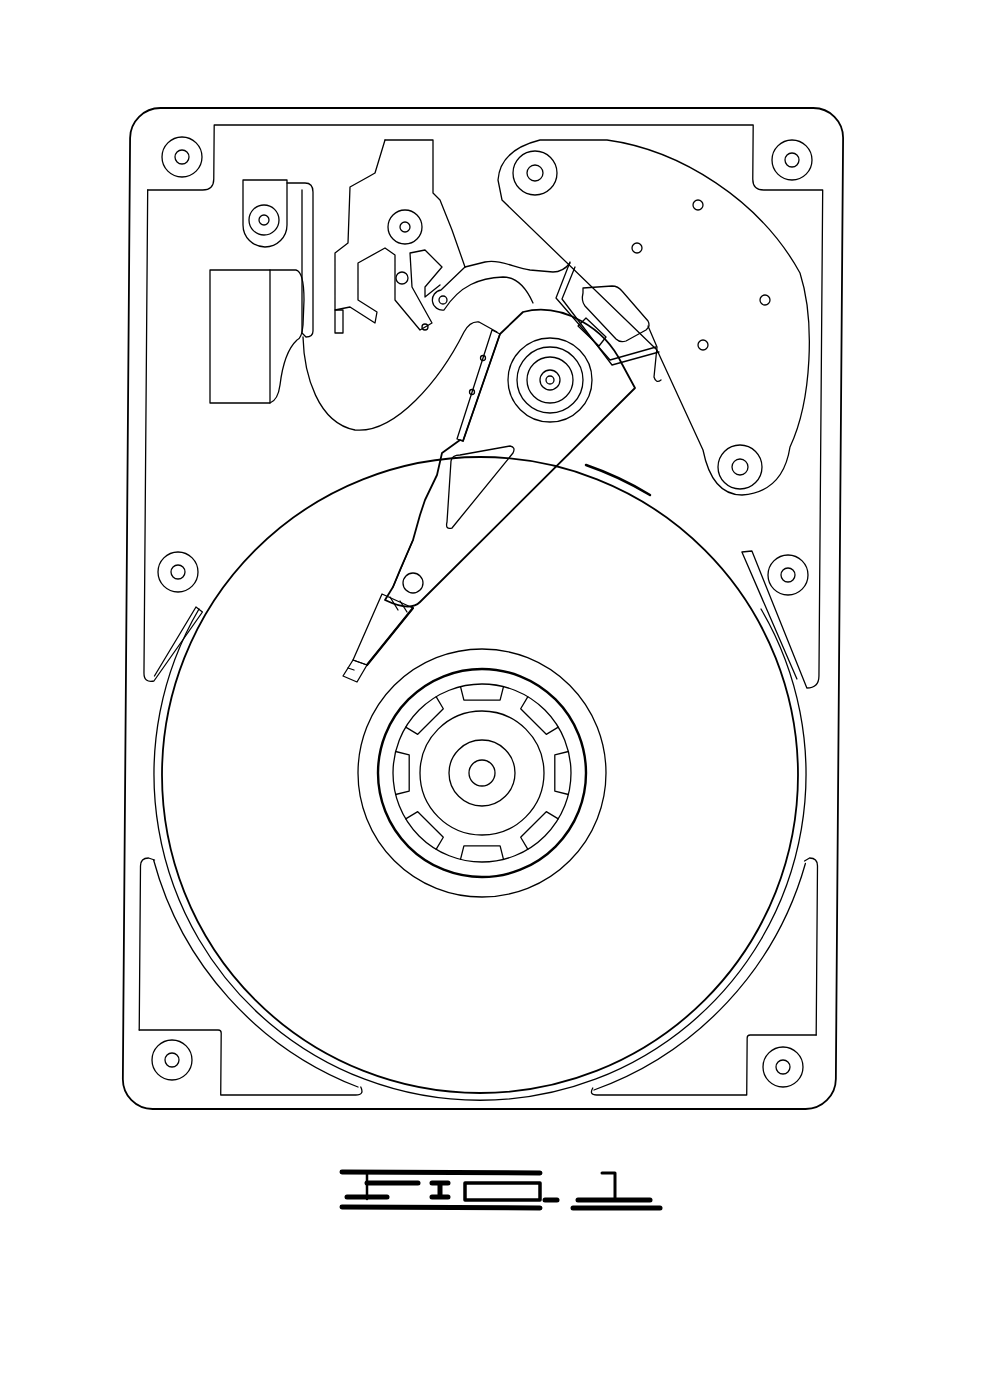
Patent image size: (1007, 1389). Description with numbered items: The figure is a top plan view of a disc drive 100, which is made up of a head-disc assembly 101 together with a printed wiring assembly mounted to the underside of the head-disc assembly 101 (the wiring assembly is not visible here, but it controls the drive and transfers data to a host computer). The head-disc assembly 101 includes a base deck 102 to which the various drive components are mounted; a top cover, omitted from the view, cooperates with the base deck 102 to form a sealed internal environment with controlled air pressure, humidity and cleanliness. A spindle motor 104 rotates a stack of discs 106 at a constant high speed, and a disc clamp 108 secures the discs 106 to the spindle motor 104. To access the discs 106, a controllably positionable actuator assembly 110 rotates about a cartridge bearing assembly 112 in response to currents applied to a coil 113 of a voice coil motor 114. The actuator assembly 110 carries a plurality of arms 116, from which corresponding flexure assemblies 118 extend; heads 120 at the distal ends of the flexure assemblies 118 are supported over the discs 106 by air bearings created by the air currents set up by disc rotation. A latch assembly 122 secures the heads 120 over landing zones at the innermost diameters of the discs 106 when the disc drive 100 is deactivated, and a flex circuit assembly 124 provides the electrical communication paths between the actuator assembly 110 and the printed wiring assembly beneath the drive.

The disc drive 100 is at (248, 86).
The head-disc assembly 101 is at (148, 168).
The base deck 102 is at (225, 468).
The spindle motor 104 is at (492, 803).
The discs 106 is at (727, 860).
The disc clamp 108 is at (378, 822).
The actuator assembly 110 is at (558, 395).
The cartridge bearing assembly 112 is at (530, 458).
The coil 113 is at (644, 338).
The voice coil motor 114 is at (588, 212).
The arms 116 is at (423, 558).
The flexure assemblies 118 is at (372, 640).
The heads 120 is at (345, 670).
The latch assembly 122 is at (406, 160).
The flex circuit assembly 124 is at (340, 434).